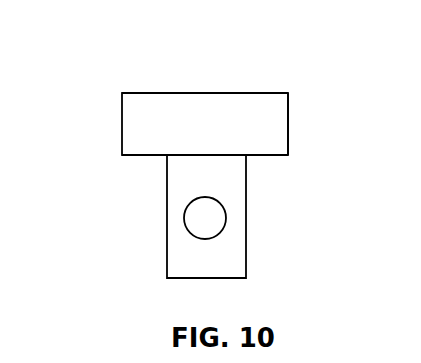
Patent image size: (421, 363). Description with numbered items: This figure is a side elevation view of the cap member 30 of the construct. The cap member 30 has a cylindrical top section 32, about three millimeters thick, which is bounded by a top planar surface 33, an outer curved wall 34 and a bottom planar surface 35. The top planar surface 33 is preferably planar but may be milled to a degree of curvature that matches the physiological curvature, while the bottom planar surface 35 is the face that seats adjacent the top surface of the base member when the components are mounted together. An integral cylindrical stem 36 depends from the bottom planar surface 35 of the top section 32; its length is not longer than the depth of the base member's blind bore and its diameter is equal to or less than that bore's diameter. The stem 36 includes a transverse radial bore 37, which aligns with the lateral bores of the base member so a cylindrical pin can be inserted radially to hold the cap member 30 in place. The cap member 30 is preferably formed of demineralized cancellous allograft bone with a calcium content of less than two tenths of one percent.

The cap member 30 is at (92, 64).
The cylindrical top section 32 is at (122, 126).
The top planar surface 33 is at (172, 93).
The outer curved wall 34 is at (288, 126).
The bottom planar surface 35 is at (258, 156).
The cylindrical stem 36 is at (246, 240).
The transverse radial bore 37 is at (207, 217).